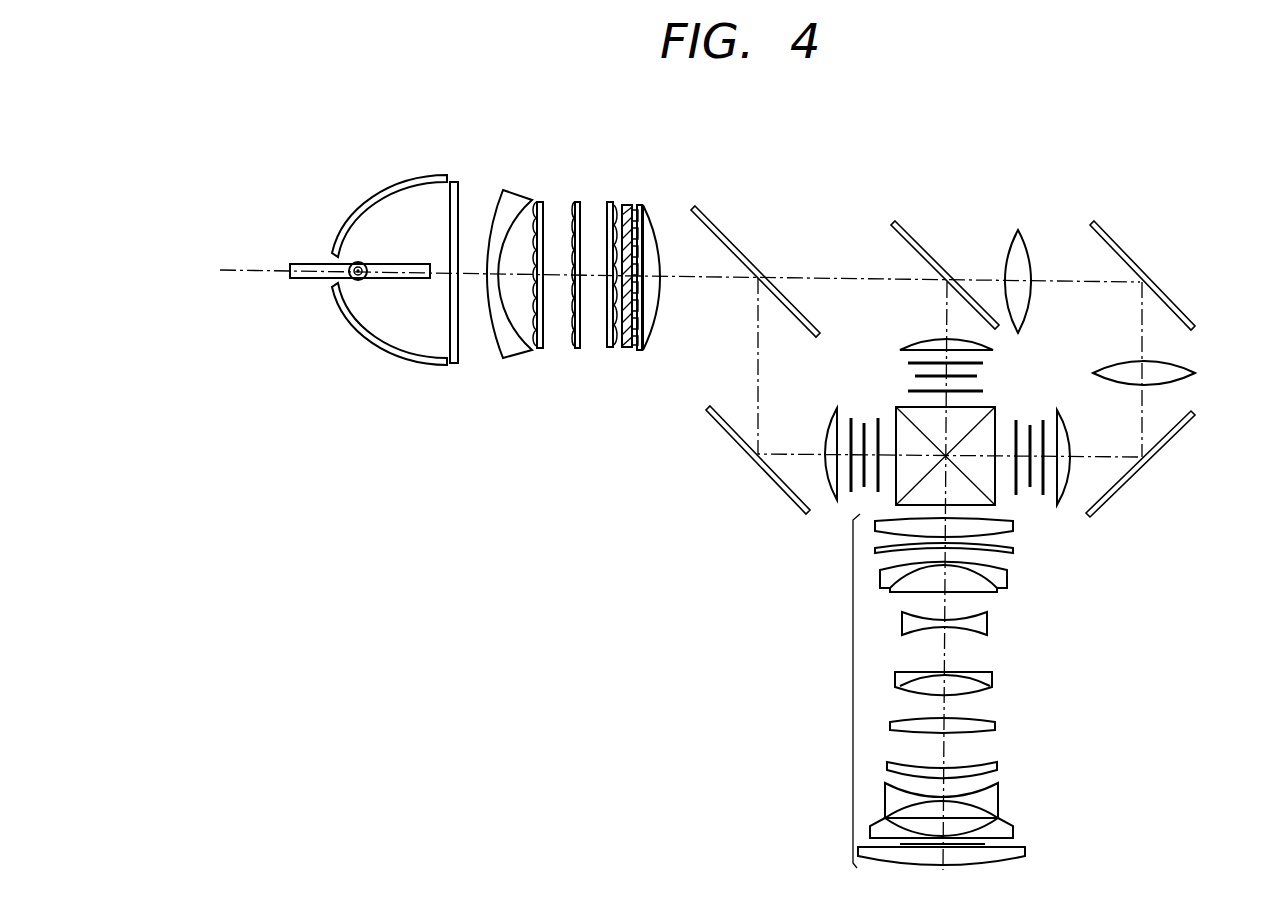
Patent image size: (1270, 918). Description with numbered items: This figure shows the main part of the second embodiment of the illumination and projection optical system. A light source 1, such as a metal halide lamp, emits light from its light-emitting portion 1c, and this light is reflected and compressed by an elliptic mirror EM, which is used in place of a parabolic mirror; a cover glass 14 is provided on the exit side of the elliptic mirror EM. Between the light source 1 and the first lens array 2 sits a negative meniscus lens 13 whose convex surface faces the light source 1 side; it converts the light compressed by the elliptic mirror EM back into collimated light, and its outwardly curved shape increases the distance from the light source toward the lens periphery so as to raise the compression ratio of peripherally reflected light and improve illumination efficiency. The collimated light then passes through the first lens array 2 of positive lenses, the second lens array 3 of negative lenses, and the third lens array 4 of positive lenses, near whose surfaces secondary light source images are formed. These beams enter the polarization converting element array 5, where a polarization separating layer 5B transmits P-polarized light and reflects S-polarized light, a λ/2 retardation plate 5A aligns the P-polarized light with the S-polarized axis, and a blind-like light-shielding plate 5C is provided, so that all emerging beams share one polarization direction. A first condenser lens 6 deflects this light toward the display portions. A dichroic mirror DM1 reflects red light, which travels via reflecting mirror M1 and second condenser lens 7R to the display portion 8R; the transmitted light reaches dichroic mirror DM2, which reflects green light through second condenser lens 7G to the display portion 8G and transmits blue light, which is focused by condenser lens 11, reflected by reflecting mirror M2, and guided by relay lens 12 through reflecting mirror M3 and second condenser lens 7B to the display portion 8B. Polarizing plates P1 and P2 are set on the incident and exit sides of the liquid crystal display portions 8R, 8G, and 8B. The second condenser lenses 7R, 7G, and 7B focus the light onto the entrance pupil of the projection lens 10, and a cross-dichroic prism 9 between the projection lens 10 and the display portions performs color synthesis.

The elliptic mirror EM is at (376, 200).
The light source 1 is at (366, 262).
The light-emitting portion 1c is at (367, 280).
The cover glass 14 is at (456, 365).
The negative meniscus lens 13 is at (520, 355).
The first lens array 2 is at (538, 200).
The second lens array 3 is at (576, 202).
The third lens array 4 is at (606, 202).
The polarization converting element array 5 is at (640, 222).
The λ/2 retardation plate 5A is at (644, 203).
The polarization separating layer 5B is at (627, 204).
The light-shielding plate 5C is at (612, 349).
The first condenser lens 6 is at (664, 218).
The dichroic mirror DM1 is at (738, 243).
The dichroic mirror DM2 is at (925, 248).
The reflecting mirror M1 is at (713, 425).
The reflecting mirror M2 is at (1125, 255).
The reflecting mirror M3 is at (1162, 450).
The condenser lens 11 is at (1030, 250).
The relay lens 12 is at (1185, 368).
The second condenser lens 7R is at (826, 425).
The second condenser lens 7G is at (905, 340).
The second condenser lens 7B is at (1070, 440).
The display portion of red image modulating unit 8R is at (862, 420).
The display portion of green image modulating unit 8G is at (977, 376).
The display portion of blue image modulating unit 8B is at (1030, 490).
The polarizing plate P1 is at (984, 360).
The polarizing plate P2 is at (985, 388).
The cross-dichroic prism 9 is at (996, 420).
The projection lens 10 is at (853, 678).